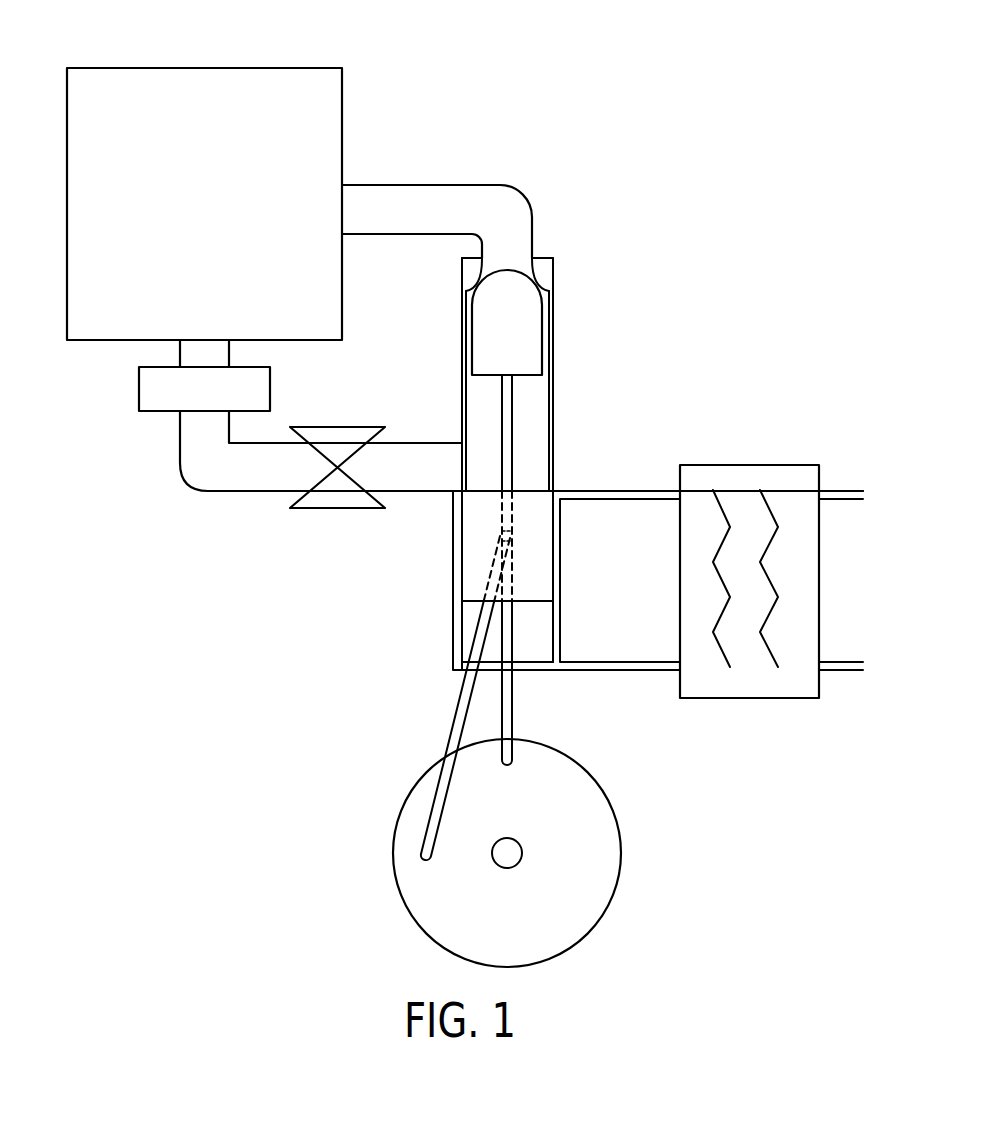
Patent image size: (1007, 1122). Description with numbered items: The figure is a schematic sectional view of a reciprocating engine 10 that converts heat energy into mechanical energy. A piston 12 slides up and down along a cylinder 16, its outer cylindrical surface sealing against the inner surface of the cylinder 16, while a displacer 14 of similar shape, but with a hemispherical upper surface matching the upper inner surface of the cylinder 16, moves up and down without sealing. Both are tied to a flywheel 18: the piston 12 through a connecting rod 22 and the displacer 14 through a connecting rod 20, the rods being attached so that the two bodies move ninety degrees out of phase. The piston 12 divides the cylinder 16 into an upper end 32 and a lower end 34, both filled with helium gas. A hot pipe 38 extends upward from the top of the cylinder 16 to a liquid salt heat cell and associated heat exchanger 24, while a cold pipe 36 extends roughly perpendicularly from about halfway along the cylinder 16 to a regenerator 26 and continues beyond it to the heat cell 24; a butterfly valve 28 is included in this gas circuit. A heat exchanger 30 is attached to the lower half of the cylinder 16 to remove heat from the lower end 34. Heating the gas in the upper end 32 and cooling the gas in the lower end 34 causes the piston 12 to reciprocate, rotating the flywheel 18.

The reciprocating engine 10 is at (738, 194).
The piston 12 is at (470, 538).
The displacer 14 is at (517, 292).
The cylinder 16 is at (555, 392).
The flywheel 18 is at (620, 848).
The connecting rod 20 is at (514, 700).
The connecting rod 22 is at (448, 727).
The liquid salt heat cell and associated heat exchanger 24 is at (196, 80).
The regenerator 26 is at (163, 403).
The butterfly valve 28 is at (332, 510).
The heat exchanger 30 is at (737, 497).
The upper end 32 is at (468, 402).
The lower end 34 is at (468, 617).
The cold pipe 36 is at (178, 350).
The hot pipe 38 is at (428, 183).